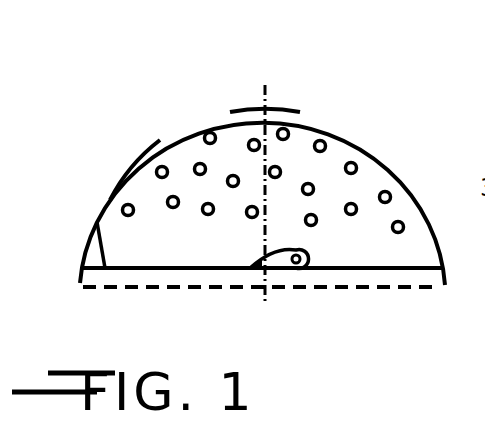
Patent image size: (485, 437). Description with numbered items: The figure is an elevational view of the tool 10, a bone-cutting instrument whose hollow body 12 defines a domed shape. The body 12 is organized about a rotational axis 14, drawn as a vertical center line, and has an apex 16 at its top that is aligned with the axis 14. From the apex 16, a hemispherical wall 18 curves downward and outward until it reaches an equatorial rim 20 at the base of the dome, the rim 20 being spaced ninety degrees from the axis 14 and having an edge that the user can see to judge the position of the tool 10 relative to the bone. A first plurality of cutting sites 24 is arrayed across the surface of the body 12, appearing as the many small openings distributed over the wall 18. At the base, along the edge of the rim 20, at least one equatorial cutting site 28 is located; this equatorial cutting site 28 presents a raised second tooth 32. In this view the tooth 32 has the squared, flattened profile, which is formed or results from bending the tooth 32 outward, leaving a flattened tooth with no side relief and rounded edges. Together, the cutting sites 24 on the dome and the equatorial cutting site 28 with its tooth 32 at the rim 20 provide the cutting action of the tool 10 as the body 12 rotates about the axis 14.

The tool 10 is at (174, 133).
The hollow body 12 is at (343, 158).
The rotational axis 14 is at (264, 86).
The apex 16 is at (268, 112).
The hemispherical wall 18 is at (127, 174).
The equatorial rim 20 is at (97, 222).
The first plurality of cutting sites 24 is at (357, 166).
The equatorial cutting site 28 is at (296, 261).
The tooth 32 is at (246, 268).